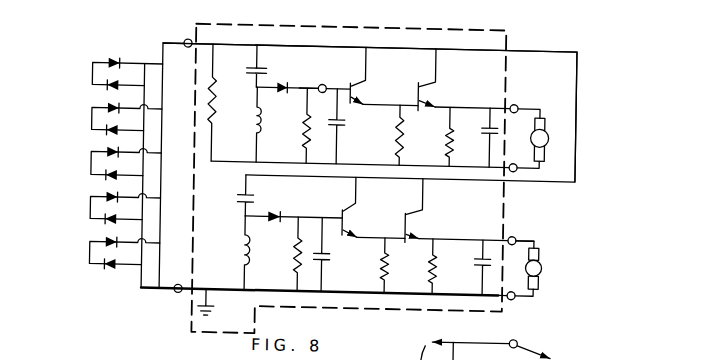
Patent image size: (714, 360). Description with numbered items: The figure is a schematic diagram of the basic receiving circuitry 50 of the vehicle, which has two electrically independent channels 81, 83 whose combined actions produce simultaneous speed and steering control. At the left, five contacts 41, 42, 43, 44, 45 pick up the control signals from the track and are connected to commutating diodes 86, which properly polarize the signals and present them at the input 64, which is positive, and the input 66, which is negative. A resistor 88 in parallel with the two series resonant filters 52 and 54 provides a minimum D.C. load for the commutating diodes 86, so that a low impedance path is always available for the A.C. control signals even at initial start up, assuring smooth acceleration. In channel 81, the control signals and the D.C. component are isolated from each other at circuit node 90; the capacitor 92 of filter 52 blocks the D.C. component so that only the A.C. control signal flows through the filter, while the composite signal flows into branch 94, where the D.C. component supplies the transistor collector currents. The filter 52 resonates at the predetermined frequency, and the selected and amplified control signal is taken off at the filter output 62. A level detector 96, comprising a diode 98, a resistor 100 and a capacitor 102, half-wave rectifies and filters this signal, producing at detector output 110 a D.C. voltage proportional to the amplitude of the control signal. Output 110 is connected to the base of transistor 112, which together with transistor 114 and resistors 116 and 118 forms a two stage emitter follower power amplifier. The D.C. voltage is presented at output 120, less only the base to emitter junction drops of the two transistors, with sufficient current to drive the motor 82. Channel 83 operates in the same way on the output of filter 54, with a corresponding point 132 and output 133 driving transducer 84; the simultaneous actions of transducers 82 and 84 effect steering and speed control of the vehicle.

The contact 41 is at (93, 74).
The contact 42 is at (93, 118).
The contact 43 is at (93, 162).
The contact 44 is at (93, 205).
The contact 45 is at (93, 250).
The receiving circuitry 50 is at (512, 21).
The series resonant filter 52 is at (258, 40).
The series resonant filter 54 is at (248, 291).
The filter output 62 is at (258, 95).
The input terminal 64 is at (185, 40).
The input terminal 66 is at (182, 293).
The channel 81 is at (581, 72).
The transducer 82 is at (550, 128).
The channel 83 is at (582, 276).
The transducer 84 is at (545, 257).
The commutating diodes 86 is at (115, 53).
The resistor 88 is at (209, 112).
The circuit node 90 is at (259, 46).
The capacitor 92 is at (256, 58).
The branch 94 is at (310, 41).
The level detector 96 is at (309, 82).
The diode 98 is at (281, 91).
The resistor 100 is at (305, 130).
The capacitor 102 is at (342, 123).
The detector output 110 is at (335, 80).
The transistor 112 is at (358, 83).
The transistor 114 is at (422, 92).
The resistor 116 is at (404, 135).
The resistor 118 is at (452, 134).
The output 120 is at (517, 97).
The point 132 is at (318, 213).
The point 133 is at (519, 231).